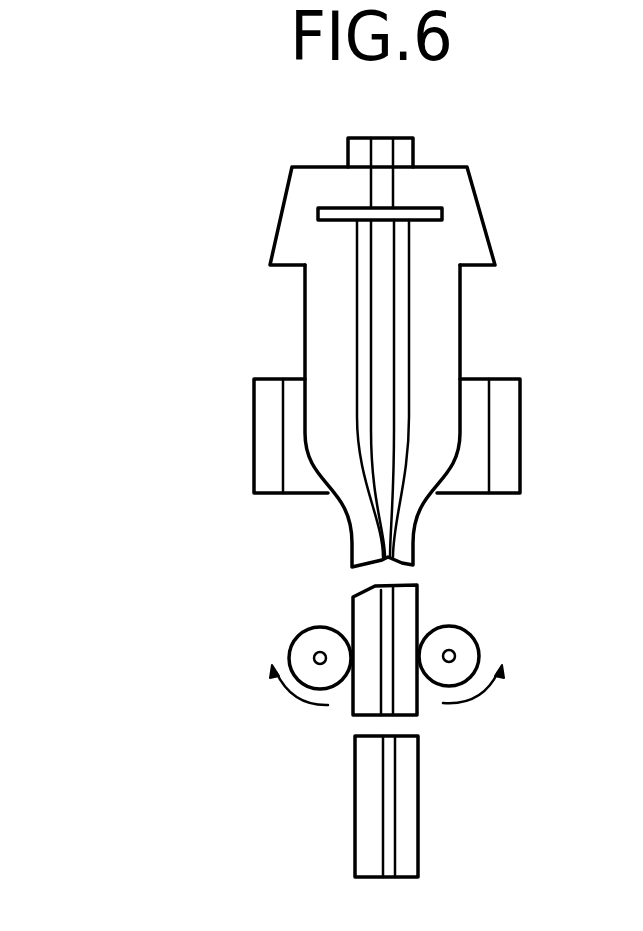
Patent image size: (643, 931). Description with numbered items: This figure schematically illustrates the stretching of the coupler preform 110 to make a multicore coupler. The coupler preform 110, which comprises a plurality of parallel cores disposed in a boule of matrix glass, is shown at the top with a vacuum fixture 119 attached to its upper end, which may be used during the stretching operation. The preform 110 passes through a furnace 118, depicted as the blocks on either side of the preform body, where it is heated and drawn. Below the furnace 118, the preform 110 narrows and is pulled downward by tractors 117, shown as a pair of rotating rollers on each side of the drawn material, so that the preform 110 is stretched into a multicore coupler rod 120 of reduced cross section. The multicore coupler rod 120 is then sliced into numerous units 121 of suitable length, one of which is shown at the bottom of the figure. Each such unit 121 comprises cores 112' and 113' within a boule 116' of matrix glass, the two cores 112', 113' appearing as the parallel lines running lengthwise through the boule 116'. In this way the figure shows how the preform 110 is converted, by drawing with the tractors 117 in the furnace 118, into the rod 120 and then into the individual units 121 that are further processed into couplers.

The vacuum fixture 119 is at (480, 208).
The coupler preform 110 is at (468, 308).
The furnace 118 is at (503, 431).
The multicore coupler rod 120 is at (420, 597).
The tractors 117 is at (462, 640).
The unit 121 is at (424, 789).
The boule of matrix glass 116' is at (304, 807).
The core 112' is at (298, 835).
The core 113' is at (476, 847).